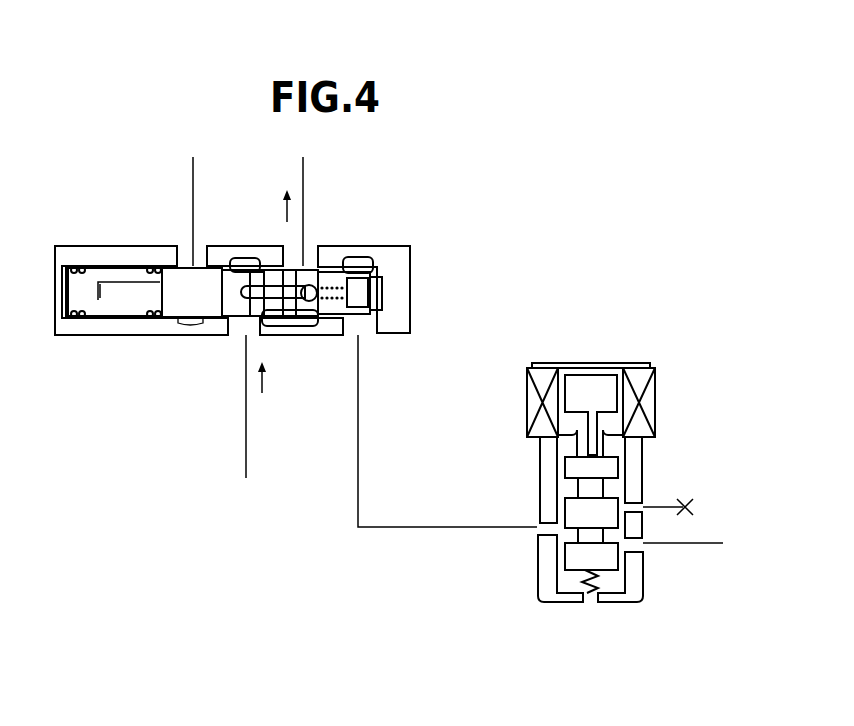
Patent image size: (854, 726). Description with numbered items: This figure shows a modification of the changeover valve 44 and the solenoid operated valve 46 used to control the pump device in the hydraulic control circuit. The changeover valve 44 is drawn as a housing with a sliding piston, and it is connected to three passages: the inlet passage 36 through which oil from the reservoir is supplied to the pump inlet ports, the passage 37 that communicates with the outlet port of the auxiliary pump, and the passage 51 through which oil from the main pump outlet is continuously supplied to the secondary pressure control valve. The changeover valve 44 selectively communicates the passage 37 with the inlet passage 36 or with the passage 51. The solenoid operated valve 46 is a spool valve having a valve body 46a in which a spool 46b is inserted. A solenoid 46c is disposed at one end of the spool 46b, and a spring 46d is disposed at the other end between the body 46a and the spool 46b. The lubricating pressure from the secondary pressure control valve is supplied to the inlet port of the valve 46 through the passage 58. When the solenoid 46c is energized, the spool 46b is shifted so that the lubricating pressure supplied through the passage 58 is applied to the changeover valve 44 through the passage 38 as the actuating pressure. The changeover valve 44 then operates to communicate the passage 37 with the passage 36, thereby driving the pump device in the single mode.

The inlet passage 36 is at (193, 221).
The passage 37 is at (246, 424).
The passage 38 is at (358, 428).
The changeover valve 44 is at (130, 338).
The solenoid operated valve 46 is at (600, 492).
The valve body 46a is at (643, 455).
The spool 46b is at (570, 467).
The solenoid 46c is at (647, 400).
The spring 46d is at (596, 583).
The passage 51 is at (303, 193).
The passage 58 is at (702, 543).